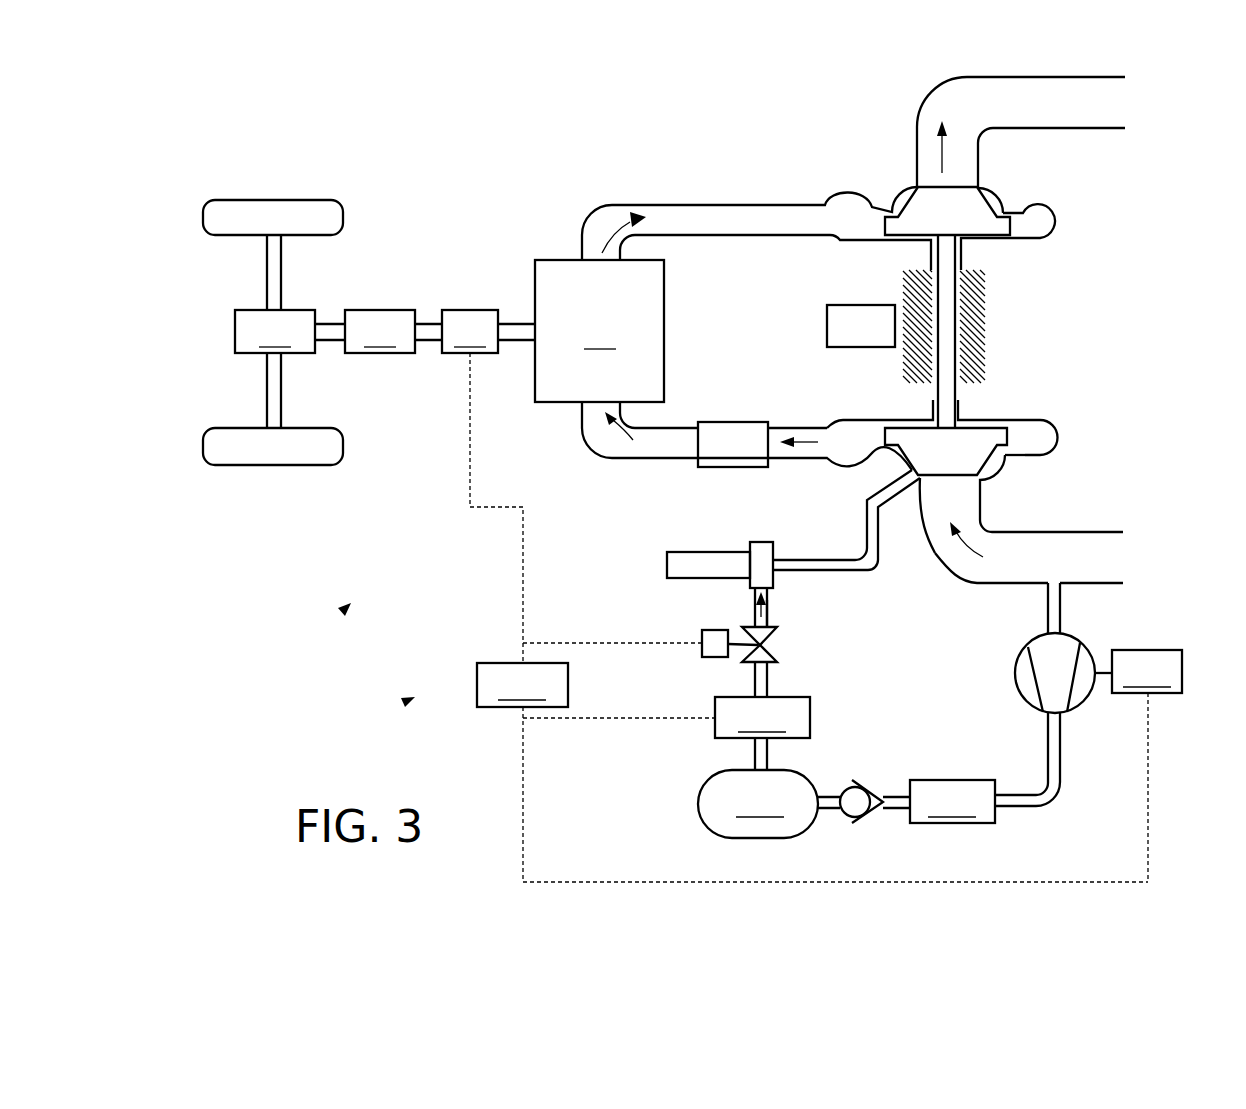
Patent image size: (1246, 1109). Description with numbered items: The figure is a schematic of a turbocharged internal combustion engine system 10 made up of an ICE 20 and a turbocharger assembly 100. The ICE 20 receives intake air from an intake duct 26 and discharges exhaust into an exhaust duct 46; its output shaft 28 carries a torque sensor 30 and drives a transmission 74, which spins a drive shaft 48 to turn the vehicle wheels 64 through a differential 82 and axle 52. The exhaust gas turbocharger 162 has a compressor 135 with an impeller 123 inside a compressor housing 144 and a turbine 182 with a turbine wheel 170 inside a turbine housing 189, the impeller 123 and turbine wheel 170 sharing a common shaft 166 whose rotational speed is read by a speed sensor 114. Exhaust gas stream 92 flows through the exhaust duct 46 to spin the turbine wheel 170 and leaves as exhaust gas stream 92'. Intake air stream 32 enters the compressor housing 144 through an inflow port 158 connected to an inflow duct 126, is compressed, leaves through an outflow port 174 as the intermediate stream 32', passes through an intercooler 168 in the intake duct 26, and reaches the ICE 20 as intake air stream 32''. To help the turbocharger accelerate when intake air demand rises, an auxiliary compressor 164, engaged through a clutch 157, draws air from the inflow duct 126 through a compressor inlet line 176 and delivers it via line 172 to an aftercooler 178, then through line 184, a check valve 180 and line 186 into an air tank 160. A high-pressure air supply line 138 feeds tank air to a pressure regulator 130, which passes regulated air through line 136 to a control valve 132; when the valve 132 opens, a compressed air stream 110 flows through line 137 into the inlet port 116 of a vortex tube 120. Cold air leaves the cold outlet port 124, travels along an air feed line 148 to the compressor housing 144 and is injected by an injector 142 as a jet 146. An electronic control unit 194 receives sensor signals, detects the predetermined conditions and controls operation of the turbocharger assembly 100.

The turbocharged internal combustion engine system 10 is at (345, 610).
The turbocharger assembly 100 is at (408, 700).
The internal combustion engine 20 is at (599, 331).
The intake duct 26 is at (613, 458).
The output shaft 28 is at (520, 317).
The torque sensor 30 is at (470, 331).
The intake air stream 32 is at (1034, 529).
The intake passage section 32' is at (788, 413).
The intake air stream 32'' is at (581, 449).
The exhaust duct 46 is at (625, 205).
The drive shaft 48 is at (325, 342).
The axle 52 is at (283, 263).
The vehicle wheels 64 is at (250, 237).
The transmission 74 is at (380, 331).
The differential 82 is at (275, 331).
The exhaust gas stream 92 is at (600, 206).
The exhaust gas stream 92' is at (977, 132).
The compressed air stream 110 is at (753, 612).
The speed sensor 114 is at (861, 326).
The inlet port 116 is at (752, 591).
The vortex tube 120 is at (723, 540).
The impeller 123 is at (1010, 435).
The cold outlet port 124 is at (775, 574).
The inflow duct 126 is at (1110, 585).
The pressure regulator 130 is at (762, 717).
The control valve 132 is at (780, 653).
The compressor 135 is at (1050, 412).
The interconnecting line 136 is at (747, 670).
The interconnecting line 137 is at (768, 612).
The high-pressure air supply line 138 is at (753, 760).
The injector 142 is at (935, 553).
The compressor housing 144 is at (1002, 418).
The jet 146 is at (930, 450).
The air feed line 148 is at (878, 552).
The clutch 157 is at (1147, 766).
The inflow port 158 is at (953, 490).
The air tank 160 is at (758, 804).
The exhaust gas turbocharger 162 is at (1012, 322).
The auxiliary compressor 164 is at (1015, 670).
The common shaft 166 is at (910, 267).
The intercooler 168 is at (733, 444).
The turbine wheel 170 is at (922, 183).
The interconnecting line 172 is at (1045, 725).
The outflow port 174 is at (827, 450).
The compressor inlet line 176 is at (1062, 600).
The aftercooler 178 is at (952, 801).
The check valve 180 is at (875, 810).
The turbine 182 is at (1060, 195).
The interconnecting line 184 is at (893, 795).
The interconnecting line 186 is at (825, 795).
The turbine housing wall 189 is at (1012, 240).
The electronic control unit 194 is at (809, 617).